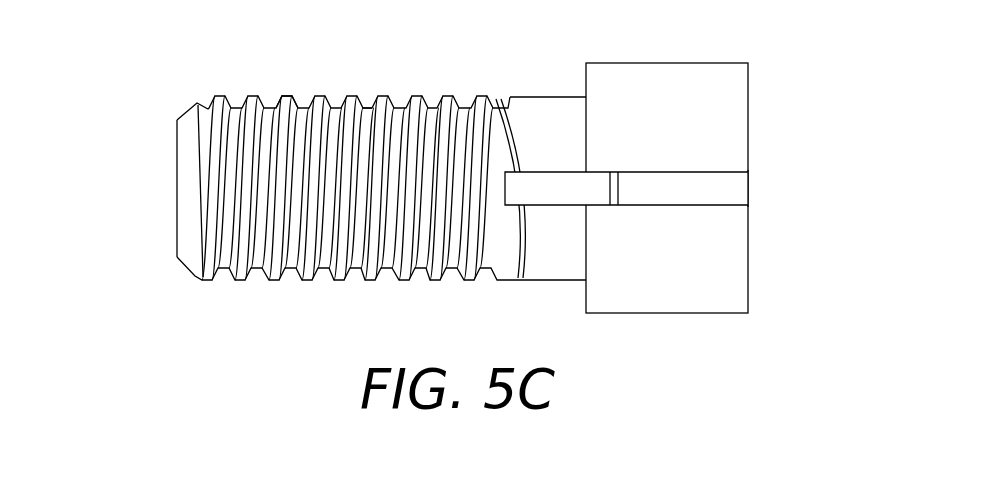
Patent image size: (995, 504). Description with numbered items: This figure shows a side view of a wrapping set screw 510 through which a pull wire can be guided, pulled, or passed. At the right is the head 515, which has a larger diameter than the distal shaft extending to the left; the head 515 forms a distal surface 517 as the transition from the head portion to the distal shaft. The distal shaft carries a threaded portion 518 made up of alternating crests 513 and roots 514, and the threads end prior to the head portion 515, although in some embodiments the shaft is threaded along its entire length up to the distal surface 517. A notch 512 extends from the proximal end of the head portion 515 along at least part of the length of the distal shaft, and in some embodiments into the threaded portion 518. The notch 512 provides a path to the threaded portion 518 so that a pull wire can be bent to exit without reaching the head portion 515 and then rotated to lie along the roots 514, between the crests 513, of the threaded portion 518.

The wrapping set screw 510 is at (175, 37).
The notch 512 is at (730, 188).
The crests 513 is at (288, 95).
The roots 514 is at (369, 107).
The head 515 is at (717, 80).
The distal surface 517 is at (585, 82).
The threaded portion 518 is at (391, 82).